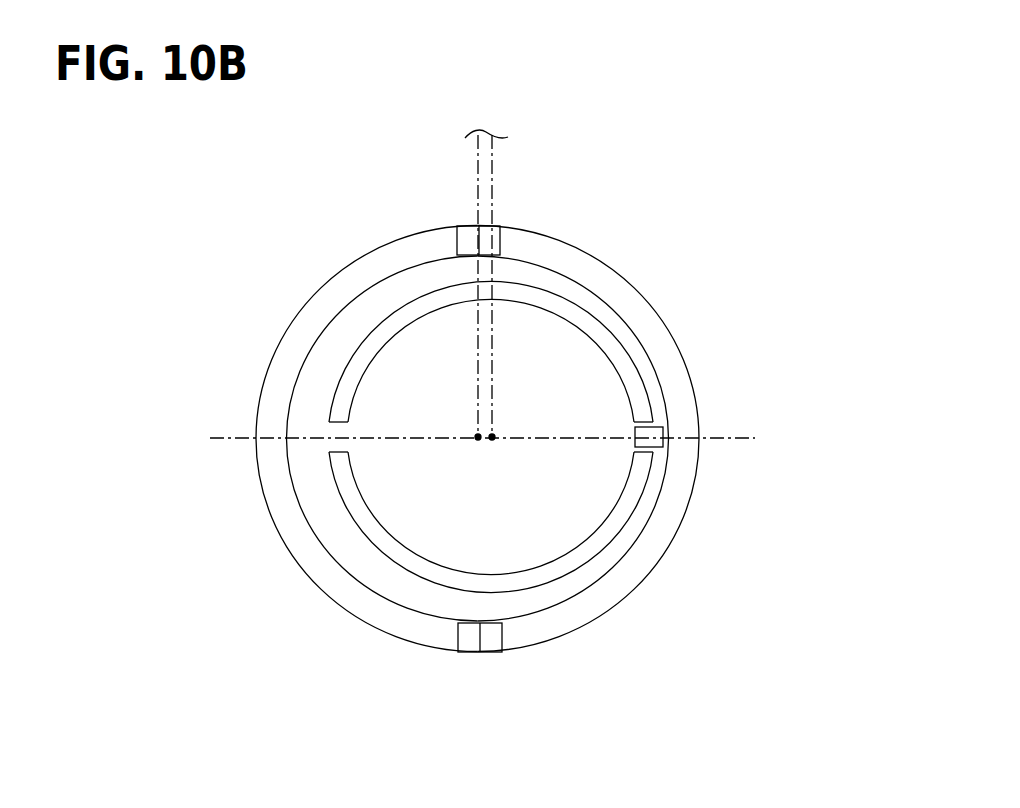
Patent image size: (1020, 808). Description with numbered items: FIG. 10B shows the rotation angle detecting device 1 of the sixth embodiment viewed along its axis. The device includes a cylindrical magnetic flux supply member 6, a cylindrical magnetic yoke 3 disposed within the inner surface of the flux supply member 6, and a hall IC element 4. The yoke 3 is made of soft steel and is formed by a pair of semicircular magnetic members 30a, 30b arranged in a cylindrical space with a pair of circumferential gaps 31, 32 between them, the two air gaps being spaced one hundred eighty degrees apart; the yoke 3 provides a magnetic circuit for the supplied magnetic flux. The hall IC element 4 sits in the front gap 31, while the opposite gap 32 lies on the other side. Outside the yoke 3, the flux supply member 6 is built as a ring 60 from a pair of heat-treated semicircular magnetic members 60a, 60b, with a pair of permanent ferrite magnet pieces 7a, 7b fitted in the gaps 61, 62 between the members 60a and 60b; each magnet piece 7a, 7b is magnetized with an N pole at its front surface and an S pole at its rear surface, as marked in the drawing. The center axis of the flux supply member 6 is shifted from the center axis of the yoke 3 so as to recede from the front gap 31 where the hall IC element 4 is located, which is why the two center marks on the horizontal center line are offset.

The rotation angle detecting device 1 is at (600, 184).
The cylindrical magnetic yoke 3 is at (478, 413).
The hall IC element 4 is at (660, 430).
The cylindrical magnetic flux supply member 6 is at (467, 435).
The permanent ferrite magnet piece 7a is at (472, 226).
The permanent ferrite magnet piece 7b is at (475, 652).
The semicircular magnetic member 30a is at (568, 305).
The semicircular magnetic member 30b is at (600, 543).
The front circumferential gap 31 is at (645, 450).
The circumferential gap 32 is at (333, 445).
The stator ring 60 is at (467, 439).
The heat-treated semi-circular magnetic member 60a is at (295, 343).
The heat-treated semi-circular magnetic member 60b is at (658, 338).
The gap 61 is at (498, 226).
The gap 62 is at (495, 652).